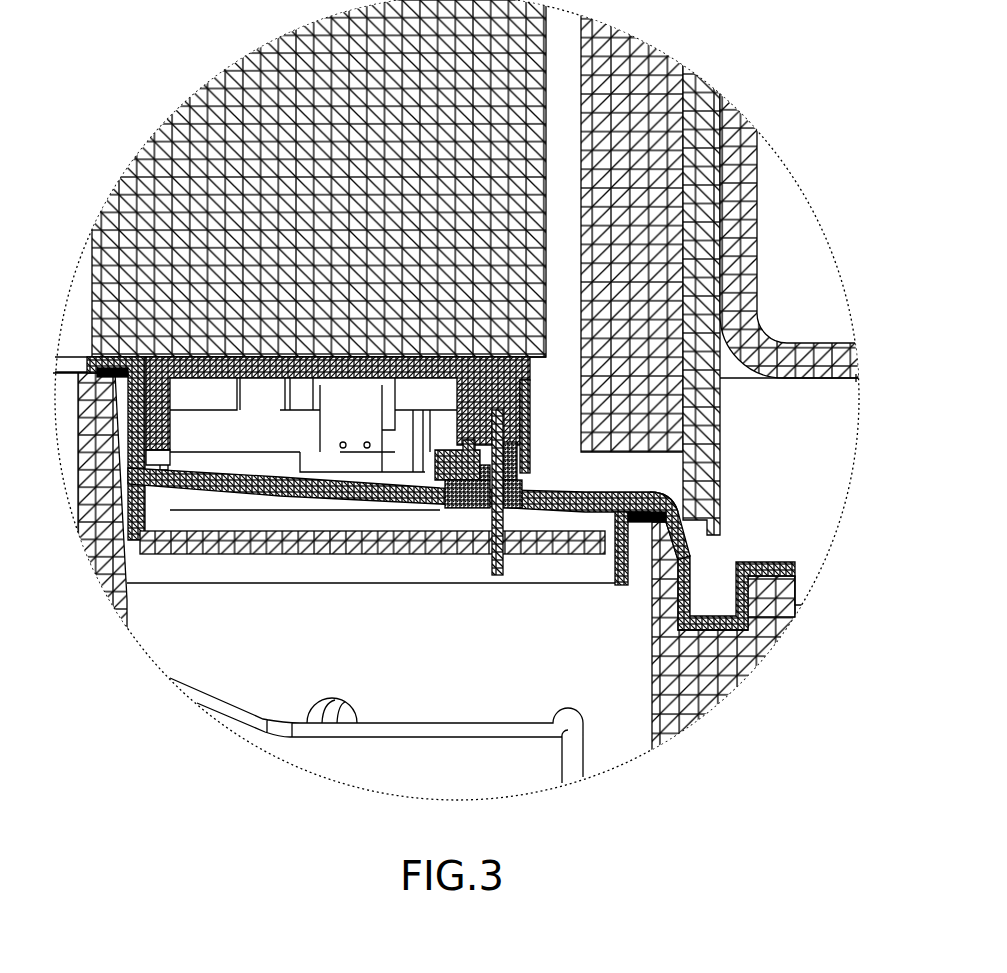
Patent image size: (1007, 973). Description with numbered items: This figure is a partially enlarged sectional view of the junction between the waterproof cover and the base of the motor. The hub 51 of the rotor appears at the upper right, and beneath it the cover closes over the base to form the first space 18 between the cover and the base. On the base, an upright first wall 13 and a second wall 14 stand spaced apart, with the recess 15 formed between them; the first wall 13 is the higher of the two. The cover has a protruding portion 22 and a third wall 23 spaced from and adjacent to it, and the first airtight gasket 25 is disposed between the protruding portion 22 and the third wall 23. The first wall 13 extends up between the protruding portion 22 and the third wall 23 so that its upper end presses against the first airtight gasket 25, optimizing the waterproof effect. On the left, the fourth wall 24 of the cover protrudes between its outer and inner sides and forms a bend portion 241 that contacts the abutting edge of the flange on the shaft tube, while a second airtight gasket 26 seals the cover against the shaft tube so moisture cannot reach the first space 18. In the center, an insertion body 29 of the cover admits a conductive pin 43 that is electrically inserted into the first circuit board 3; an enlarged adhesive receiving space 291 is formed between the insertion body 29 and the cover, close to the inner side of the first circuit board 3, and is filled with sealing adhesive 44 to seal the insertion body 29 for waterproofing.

The hub 51 is at (700, 102).
The second airtight gasket 26 is at (117, 357).
The bend portion 241 is at (102, 372).
The fourth wall 24 is at (135, 441).
The first circuit board 3 is at (320, 555).
The adhesive receiving space 291 is at (446, 482).
The sealing adhesive 44 is at (472, 510).
The conductive pin 43 is at (505, 555).
The insertion body 29 is at (537, 432).
The third wall 23 is at (618, 563).
The first airtight gasket 25 is at (650, 503).
The first wall 13 is at (663, 535).
The second wall 14 is at (770, 573).
The recess 15 is at (740, 607).
The protruding portion 22 is at (712, 628).
The first space 18 is at (615, 687).